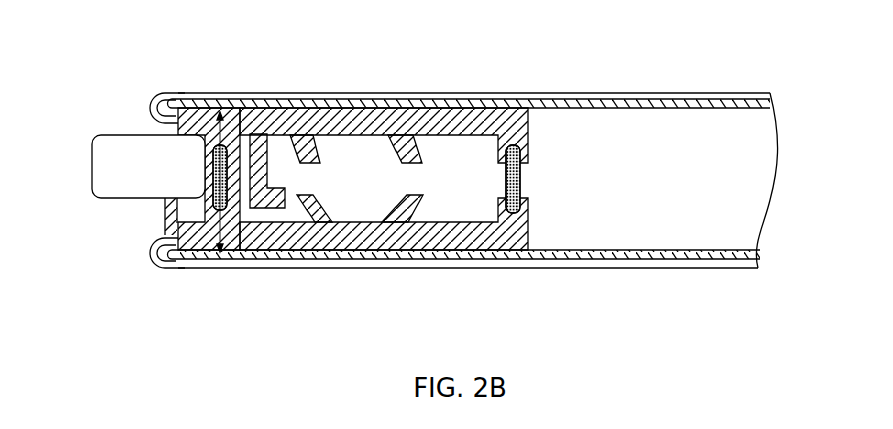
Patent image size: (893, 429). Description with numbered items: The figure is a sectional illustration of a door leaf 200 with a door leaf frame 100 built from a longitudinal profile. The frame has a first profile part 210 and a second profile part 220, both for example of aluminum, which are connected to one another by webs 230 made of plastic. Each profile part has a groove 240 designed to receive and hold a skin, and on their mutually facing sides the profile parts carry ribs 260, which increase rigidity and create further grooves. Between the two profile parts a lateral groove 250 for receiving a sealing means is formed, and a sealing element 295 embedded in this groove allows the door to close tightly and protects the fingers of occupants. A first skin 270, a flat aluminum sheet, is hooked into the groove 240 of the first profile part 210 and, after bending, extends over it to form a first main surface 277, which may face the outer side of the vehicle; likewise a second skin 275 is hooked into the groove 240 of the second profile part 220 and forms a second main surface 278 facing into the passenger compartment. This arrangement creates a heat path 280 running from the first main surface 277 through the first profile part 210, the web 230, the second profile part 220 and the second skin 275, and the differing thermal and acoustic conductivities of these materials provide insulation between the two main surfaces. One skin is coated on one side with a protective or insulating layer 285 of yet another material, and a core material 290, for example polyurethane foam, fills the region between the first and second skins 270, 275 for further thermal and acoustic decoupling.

The door leaf frame 100 is at (580, 150).
The door leaf 200 is at (138, 113).
The first profile part 210 is at (449, 112).
The second profile part 220 is at (488, 250).
The web 230 is at (235, 168).
The groove 240 is at (185, 100).
The groove for receiving a sealing means 250 is at (206, 246).
The ribs 260 is at (318, 150).
The first skin 270 is at (222, 116).
The second skin 275 is at (255, 256).
The first main surface 277 is at (585, 98).
The second main surface 278 is at (608, 270).
The heat path 280 is at (256, 130).
The protective layer or insulating layer 285 is at (718, 104).
The core material 290 is at (623, 188).
The sealing element 295 is at (123, 198).